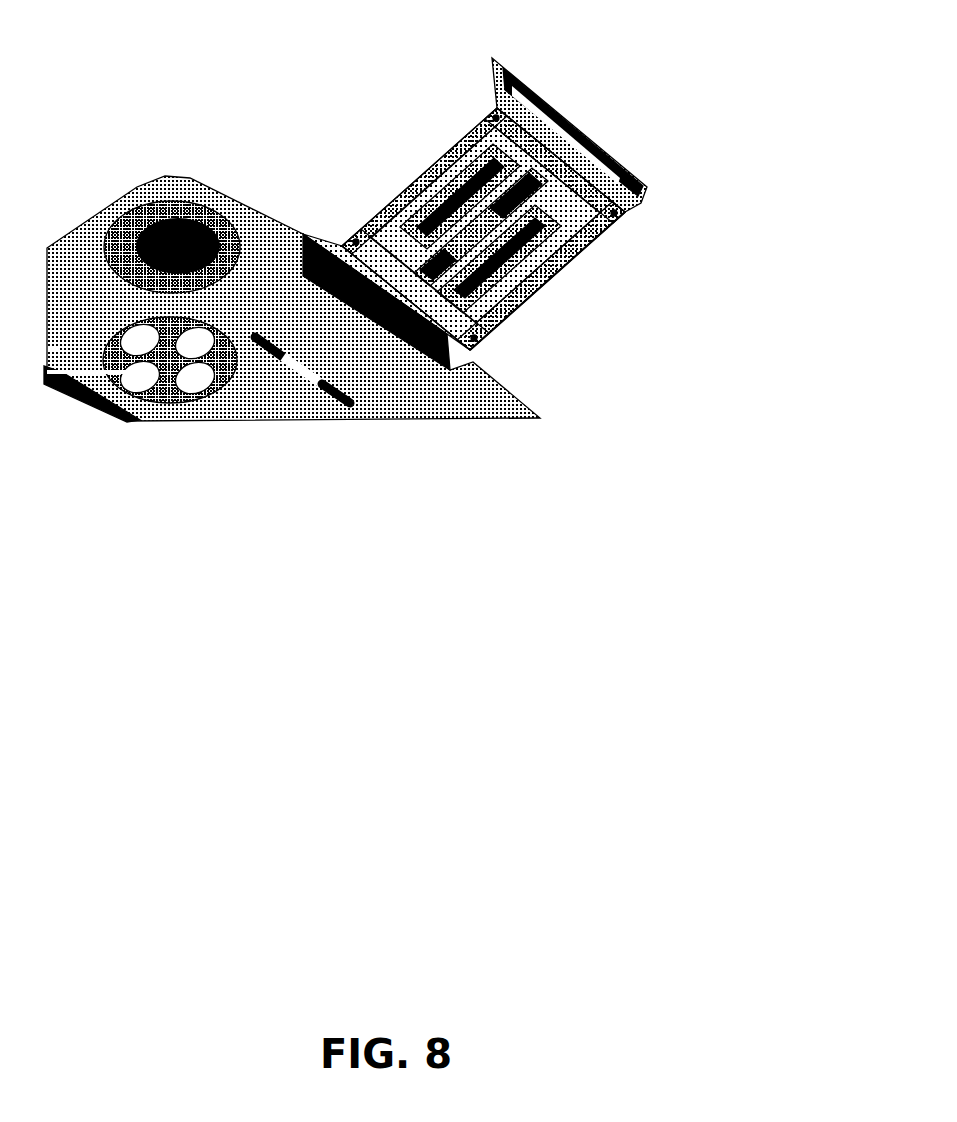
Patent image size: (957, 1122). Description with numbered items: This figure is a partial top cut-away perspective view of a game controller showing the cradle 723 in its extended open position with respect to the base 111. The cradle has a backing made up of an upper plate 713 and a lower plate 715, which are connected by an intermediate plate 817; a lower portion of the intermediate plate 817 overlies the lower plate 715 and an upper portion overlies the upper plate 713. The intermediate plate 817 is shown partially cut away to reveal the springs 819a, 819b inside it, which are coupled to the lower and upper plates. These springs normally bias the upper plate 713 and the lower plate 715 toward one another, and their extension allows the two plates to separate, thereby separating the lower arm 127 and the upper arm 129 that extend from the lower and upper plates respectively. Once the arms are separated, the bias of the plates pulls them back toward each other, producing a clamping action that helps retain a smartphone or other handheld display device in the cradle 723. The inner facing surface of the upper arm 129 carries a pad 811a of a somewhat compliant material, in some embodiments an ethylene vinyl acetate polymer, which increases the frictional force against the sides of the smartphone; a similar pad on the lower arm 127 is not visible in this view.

The base 111 is at (520, 402).
The lower arm 127 is at (305, 230).
The upper arm 129 is at (503, 64).
The upper plate 713 is at (618, 218).
The lower plate 715 is at (480, 343).
The cradle 723 is at (703, 259).
The pad 811a is at (500, 84).
The intermediate plate 817 is at (553, 280).
The spring 819a is at (445, 203).
The spring 819b is at (523, 242).